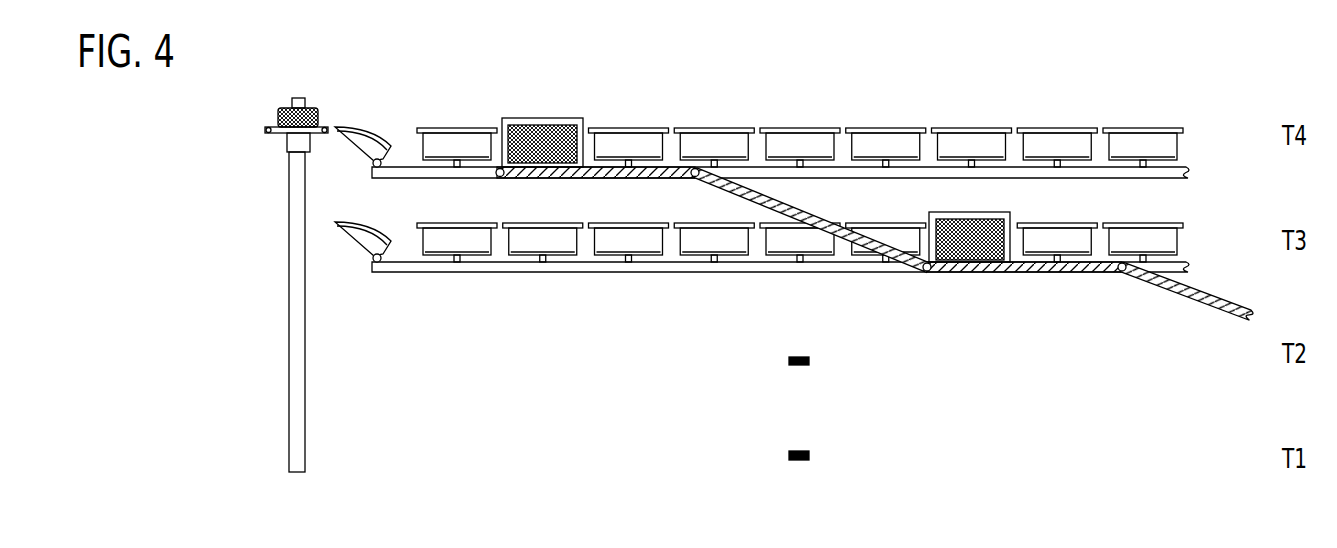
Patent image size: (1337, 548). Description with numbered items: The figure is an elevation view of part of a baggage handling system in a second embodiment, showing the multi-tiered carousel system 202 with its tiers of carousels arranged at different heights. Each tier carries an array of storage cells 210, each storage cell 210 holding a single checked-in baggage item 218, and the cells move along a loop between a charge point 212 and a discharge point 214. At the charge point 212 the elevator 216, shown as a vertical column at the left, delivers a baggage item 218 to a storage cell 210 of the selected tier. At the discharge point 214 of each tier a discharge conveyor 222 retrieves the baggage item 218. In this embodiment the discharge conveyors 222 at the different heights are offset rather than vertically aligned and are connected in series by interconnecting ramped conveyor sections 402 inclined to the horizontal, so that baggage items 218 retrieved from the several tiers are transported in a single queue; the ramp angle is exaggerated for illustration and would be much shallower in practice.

The multi-tiered carousel system 202 is at (957, 78).
The storage cell 210 is at (377, 128).
The charge point 212 is at (297, 254).
The discharge point 214 is at (548, 180).
The elevator 216 is at (292, 136).
The baggage item 218 is at (544, 150).
The discharge conveyor 222 is at (615, 178).
The ramped conveyor section 402 is at (786, 203).